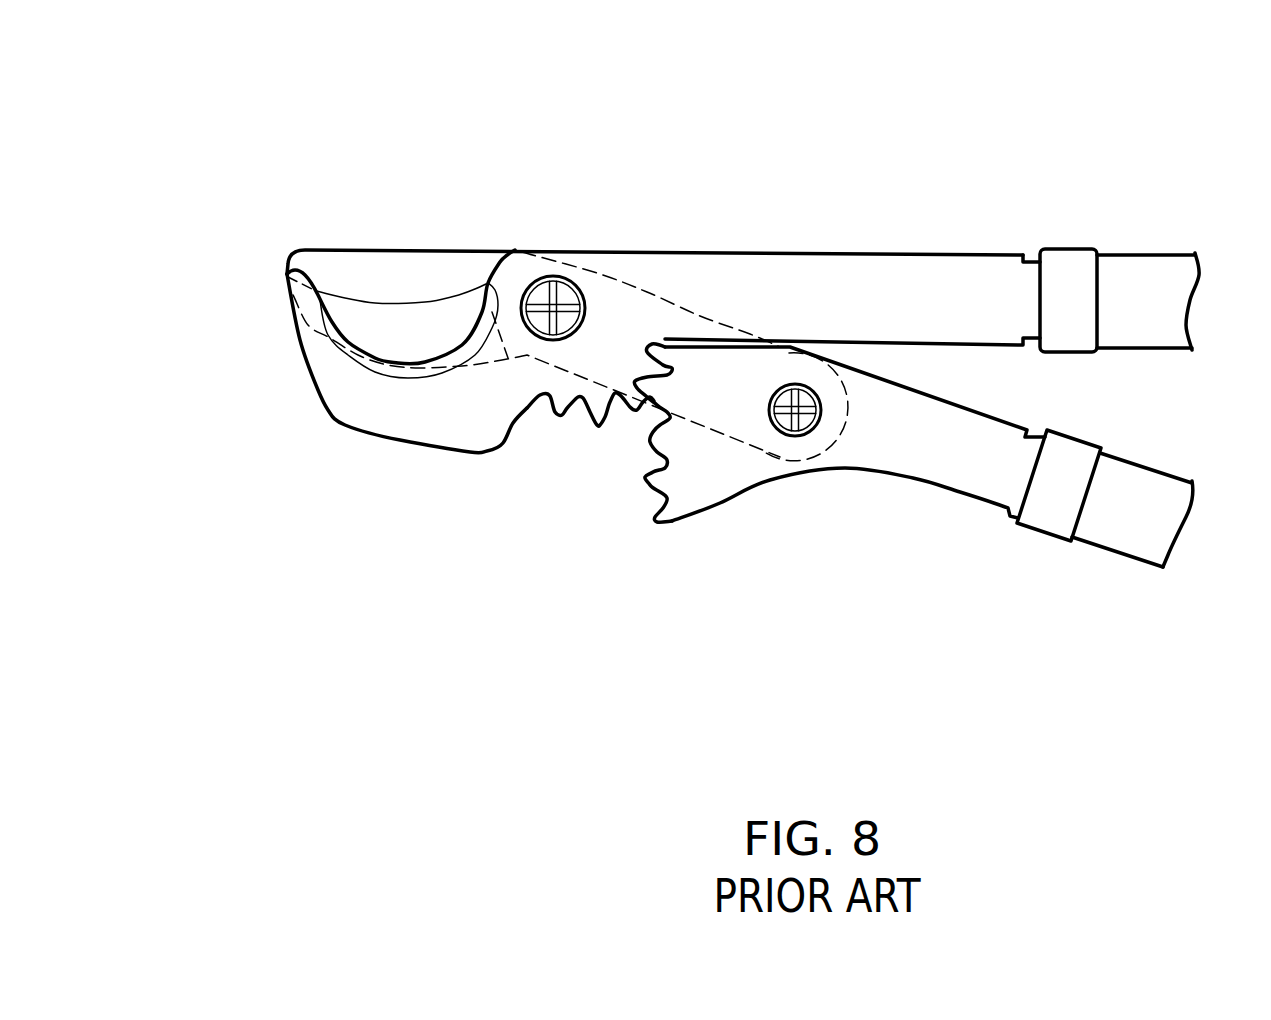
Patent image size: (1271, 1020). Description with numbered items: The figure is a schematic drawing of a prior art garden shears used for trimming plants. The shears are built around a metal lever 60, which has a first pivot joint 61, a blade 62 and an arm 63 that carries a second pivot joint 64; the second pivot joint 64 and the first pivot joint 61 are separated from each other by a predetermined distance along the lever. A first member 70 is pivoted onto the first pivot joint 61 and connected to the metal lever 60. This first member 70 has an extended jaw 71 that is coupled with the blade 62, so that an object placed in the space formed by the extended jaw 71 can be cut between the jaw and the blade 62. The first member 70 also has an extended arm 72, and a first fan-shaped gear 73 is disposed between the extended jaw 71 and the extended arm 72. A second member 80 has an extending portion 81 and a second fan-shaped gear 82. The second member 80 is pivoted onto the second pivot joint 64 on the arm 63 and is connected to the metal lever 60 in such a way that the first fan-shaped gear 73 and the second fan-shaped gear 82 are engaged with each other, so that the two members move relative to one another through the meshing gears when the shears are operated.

The metal lever 60 is at (647, 275).
The first pivot joint 61 is at (543, 292).
The blade 62 is at (375, 320).
The arm 63 is at (720, 337).
The second pivot joint 64 is at (790, 422).
The first member 70 is at (385, 462).
The extended jaw 71 is at (365, 362).
The extended arm 72 is at (943, 273).
The first fan-shaped gear 73 is at (560, 405).
The second member 80 is at (1030, 409).
The extending portion 81 is at (943, 473).
The second fan-shaped gear 82 is at (660, 474).